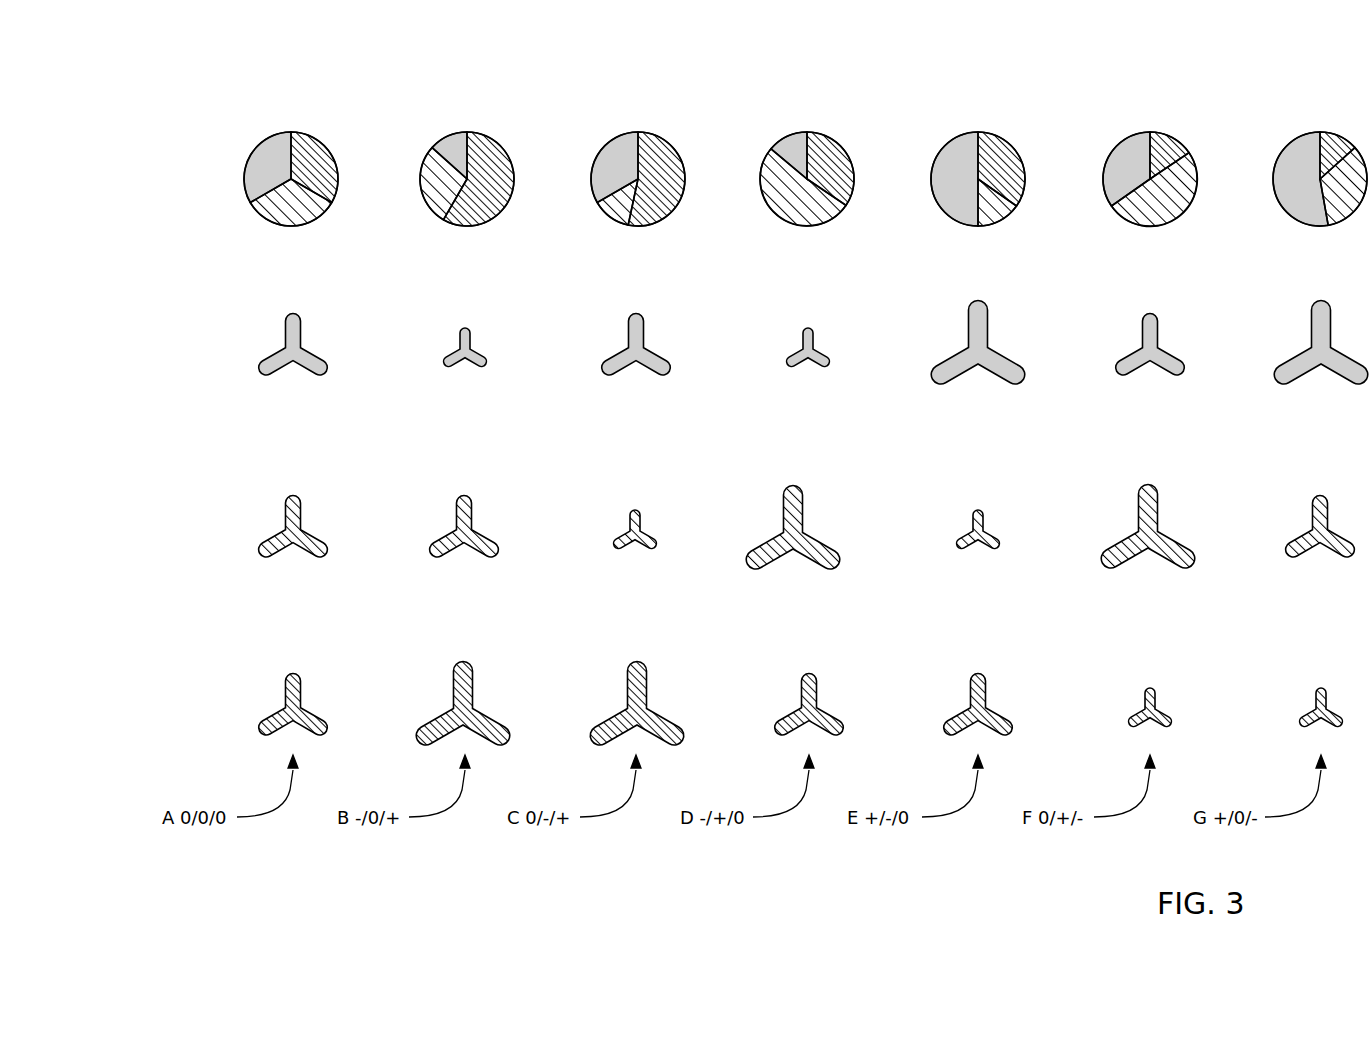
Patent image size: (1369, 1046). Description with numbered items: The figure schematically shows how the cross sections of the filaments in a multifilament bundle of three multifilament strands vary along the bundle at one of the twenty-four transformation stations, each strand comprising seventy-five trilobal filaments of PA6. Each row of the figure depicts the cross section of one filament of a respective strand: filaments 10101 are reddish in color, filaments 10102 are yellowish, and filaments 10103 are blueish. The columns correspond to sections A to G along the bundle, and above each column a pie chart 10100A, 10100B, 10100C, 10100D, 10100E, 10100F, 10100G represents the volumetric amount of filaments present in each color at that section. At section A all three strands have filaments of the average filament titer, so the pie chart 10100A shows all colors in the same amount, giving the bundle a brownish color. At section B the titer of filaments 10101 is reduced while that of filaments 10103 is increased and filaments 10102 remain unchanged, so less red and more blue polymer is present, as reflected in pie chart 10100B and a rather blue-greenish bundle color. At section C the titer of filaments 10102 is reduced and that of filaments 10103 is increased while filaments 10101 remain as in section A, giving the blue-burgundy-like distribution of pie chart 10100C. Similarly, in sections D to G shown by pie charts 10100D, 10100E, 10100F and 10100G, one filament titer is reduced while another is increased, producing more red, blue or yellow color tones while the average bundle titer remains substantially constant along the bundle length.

The pie chart 10100A is at (221, 156).
The pie chart 10100B is at (398, 156).
The pie chart 10100C is at (570, 156).
The pie chart 10100D is at (738, 156).
The pie chart 10100E is at (909, 156).
The pie chart 10100F is at (1082, 156).
The pie chart 10100G is at (1252, 156).
The filament 10101 is at (701, 343).
The filament 10102 is at (694, 527).
The filament 10103 is at (688, 704).